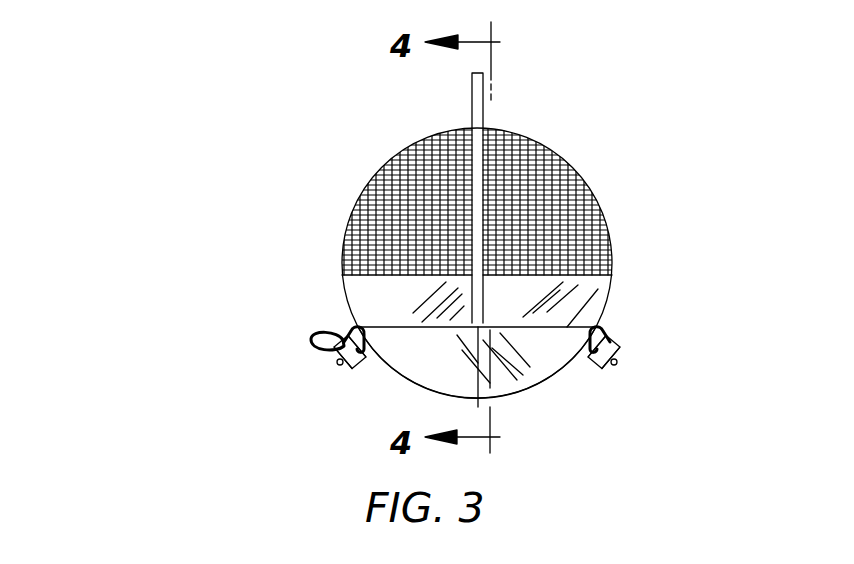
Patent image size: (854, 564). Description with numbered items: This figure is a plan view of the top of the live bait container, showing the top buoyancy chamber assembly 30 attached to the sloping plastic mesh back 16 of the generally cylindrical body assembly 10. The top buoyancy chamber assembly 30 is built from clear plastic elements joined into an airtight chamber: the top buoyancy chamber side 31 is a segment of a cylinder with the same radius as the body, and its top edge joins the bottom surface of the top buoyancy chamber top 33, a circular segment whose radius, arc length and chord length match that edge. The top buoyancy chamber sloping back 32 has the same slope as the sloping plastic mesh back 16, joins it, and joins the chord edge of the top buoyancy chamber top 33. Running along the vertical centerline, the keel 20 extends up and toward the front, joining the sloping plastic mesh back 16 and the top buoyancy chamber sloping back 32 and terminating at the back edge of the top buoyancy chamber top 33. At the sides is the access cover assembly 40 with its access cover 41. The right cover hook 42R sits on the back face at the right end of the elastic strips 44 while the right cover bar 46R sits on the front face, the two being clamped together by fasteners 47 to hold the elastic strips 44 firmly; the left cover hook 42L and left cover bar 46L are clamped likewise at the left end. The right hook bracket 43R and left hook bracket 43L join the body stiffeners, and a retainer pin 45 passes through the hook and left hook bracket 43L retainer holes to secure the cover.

The cylindrical body assembly 10 is at (533, 129).
The sloping plastic mesh back 16 is at (380, 170).
The keel 20 is at (472, 107).
The top buoyancy chamber assembly 30 is at (403, 384).
The top buoyancy chamber side 31 is at (498, 397).
The top buoyancy chamber sloping back 32 is at (348, 300).
The top buoyancy chamber top 33 is at (593, 330).
The access cover assembly 40 is at (381, 364).
The access cover 41 is at (620, 355).
The left cover hook 42L is at (347, 327).
The right cover hook 42R is at (600, 327).
The left hook bracket 43L is at (368, 364).
The right hook bracket 43R is at (607, 333).
The elastic strips 44 is at (578, 360).
The retainer pin 45 is at (320, 349).
The left cover bar 46L is at (352, 358).
The right cover bar 46R is at (595, 363).
The fastener 47 is at (340, 348).